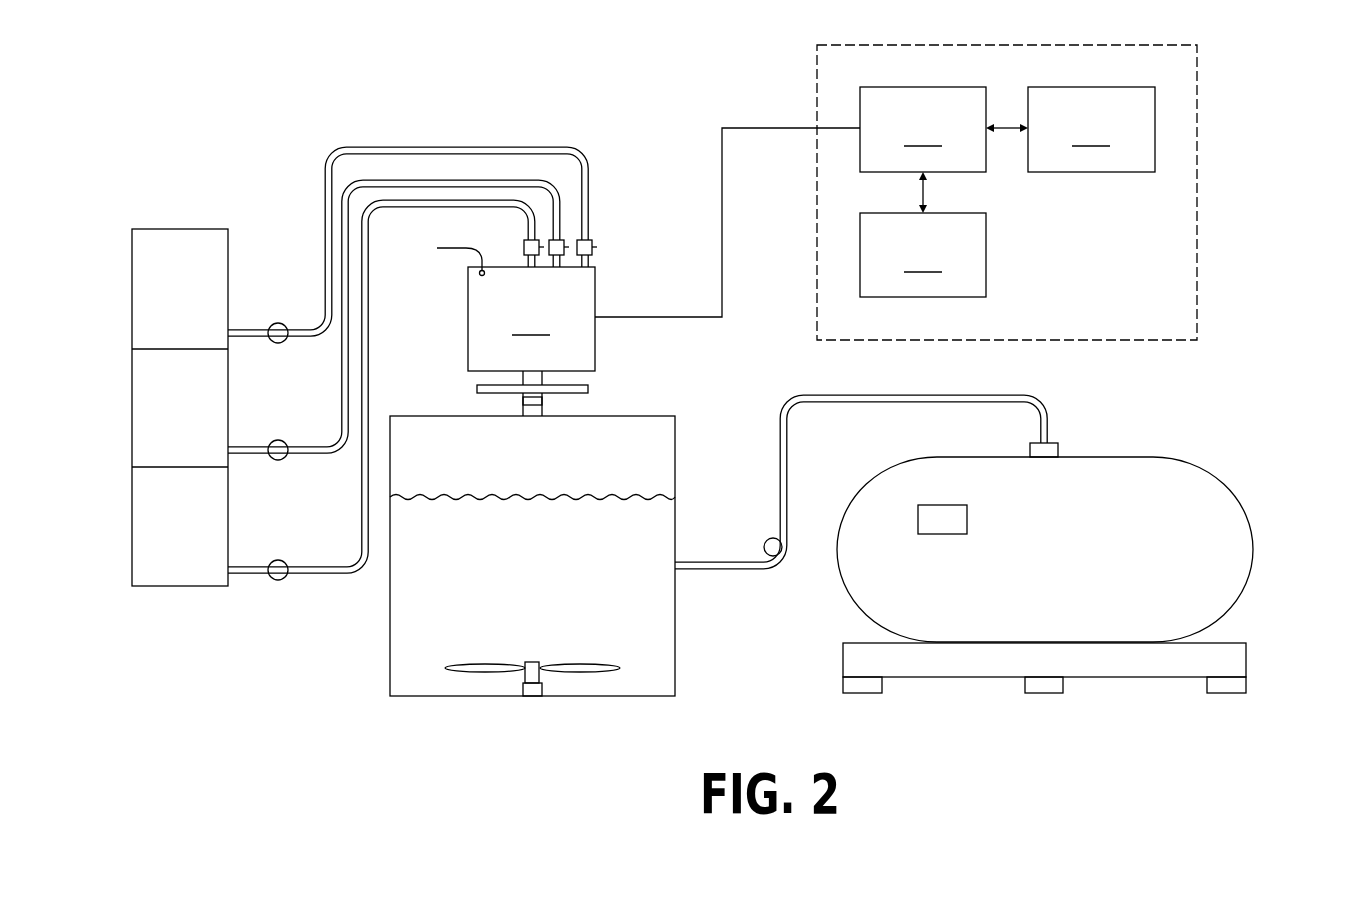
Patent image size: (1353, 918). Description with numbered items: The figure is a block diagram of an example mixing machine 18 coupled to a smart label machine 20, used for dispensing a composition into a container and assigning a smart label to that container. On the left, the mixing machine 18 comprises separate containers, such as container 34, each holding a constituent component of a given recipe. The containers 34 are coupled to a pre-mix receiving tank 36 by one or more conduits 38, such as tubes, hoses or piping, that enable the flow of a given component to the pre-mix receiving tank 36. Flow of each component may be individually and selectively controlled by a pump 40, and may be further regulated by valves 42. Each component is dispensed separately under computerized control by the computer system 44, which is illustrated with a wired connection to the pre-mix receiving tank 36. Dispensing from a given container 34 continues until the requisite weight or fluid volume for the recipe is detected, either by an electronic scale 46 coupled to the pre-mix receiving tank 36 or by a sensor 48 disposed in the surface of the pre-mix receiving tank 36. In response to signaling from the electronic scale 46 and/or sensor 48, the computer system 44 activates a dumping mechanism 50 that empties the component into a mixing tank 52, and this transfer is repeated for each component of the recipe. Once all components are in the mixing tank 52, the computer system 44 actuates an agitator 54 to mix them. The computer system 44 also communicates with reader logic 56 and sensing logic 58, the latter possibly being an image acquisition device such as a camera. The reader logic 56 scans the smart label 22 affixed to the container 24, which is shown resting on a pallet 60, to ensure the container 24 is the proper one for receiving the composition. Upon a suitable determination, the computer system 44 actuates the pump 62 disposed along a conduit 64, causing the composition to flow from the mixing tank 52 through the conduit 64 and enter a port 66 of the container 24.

The mixing machine 18 is at (298, 88).
The smart label machine 20 is at (1197, 128).
The smart label 22 is at (943, 505).
The container 24 is at (1253, 557).
The container 34 is at (132, 399).
The pre-mix receiving tank 36 is at (664, 272).
The conduits 38 is at (444, 148).
The pump 40 is at (276, 322).
The valves 42 is at (597, 249).
The computer system 44 is at (944, 150).
The electronic scale 46 is at (588, 389).
The sensor 48 is at (464, 252).
The dumping mechanism 50 is at (542, 405).
The mixing tank 52 is at (675, 532).
The agitator 54 is at (476, 665).
The reader logic 56 is at (923, 255).
The sensing logic 58 is at (1091, 129).
The pallet 60 is at (1246, 667).
The pump 62 is at (782, 550).
The conduit 64 is at (780, 438).
The port 66 is at (1053, 443).